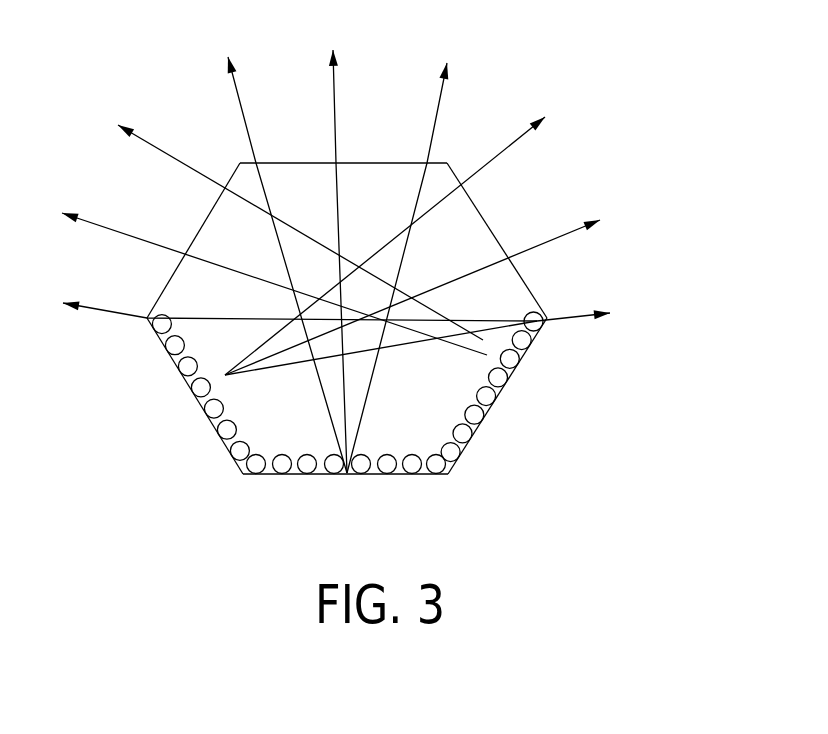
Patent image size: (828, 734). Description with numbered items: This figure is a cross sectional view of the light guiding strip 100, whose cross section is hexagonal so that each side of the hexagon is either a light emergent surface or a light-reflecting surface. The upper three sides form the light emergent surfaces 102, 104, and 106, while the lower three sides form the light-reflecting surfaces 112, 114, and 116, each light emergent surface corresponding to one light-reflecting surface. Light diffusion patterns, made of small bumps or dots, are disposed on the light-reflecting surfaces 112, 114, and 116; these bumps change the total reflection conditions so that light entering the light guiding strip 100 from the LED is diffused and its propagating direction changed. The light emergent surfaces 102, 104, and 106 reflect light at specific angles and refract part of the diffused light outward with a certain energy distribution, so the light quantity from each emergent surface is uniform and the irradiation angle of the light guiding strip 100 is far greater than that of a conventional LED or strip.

The light guiding strip 100 is at (379, 283).
The light emergent surface 102 is at (365, 163).
The light emergent surface 104 is at (482, 218).
The light emergent surface 106 is at (205, 222).
The light-reflecting surface 112 is at (347, 474).
The light-reflecting surface 114 is at (200, 405).
The light-reflecting surface 116 is at (502, 390).